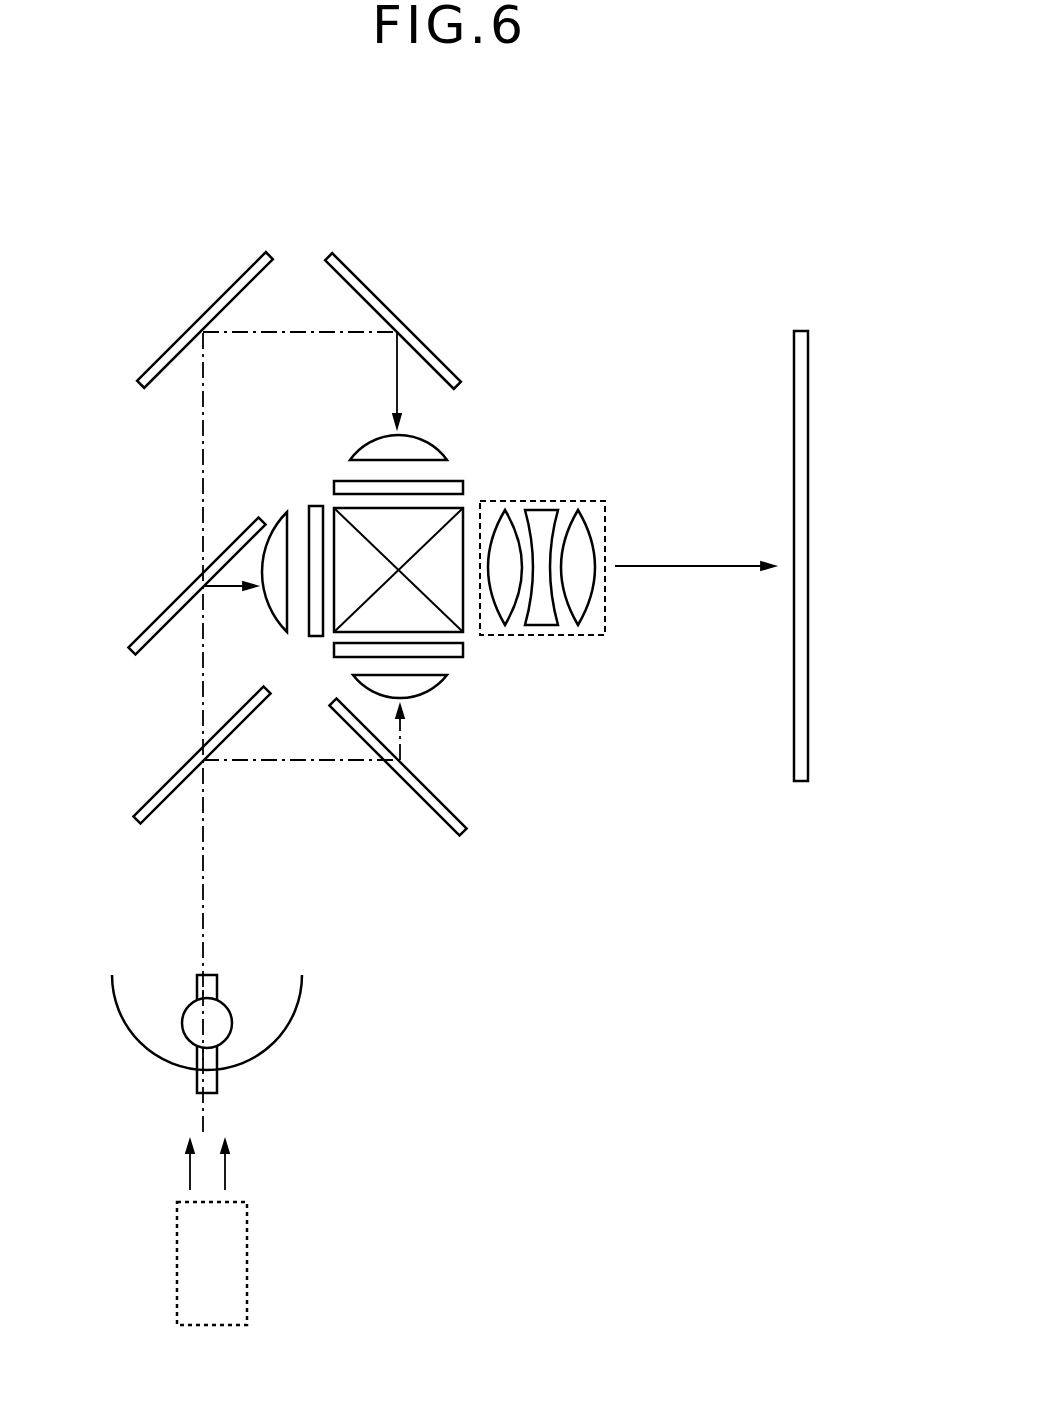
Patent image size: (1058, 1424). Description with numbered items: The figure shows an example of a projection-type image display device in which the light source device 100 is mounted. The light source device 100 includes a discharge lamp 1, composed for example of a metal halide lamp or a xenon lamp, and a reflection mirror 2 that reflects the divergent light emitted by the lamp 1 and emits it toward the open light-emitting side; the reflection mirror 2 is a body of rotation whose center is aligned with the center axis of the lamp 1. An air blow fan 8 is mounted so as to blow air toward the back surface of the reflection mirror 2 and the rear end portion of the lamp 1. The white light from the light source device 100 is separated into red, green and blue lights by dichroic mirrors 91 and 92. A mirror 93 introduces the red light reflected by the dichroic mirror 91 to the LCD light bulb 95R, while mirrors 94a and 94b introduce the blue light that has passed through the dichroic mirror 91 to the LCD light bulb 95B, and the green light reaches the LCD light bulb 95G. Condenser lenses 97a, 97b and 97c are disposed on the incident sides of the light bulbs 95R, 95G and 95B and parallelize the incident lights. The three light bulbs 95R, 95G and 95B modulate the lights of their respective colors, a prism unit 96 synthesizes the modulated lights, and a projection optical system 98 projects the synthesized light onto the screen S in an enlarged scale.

The mirror 94a is at (210, 308).
The mirror 94b is at (377, 292).
The dichroic mirror 92 is at (150, 618).
The dichroic mirror 91 is at (145, 807).
The mirror 93 is at (377, 797).
The condenser lens 97a is at (445, 680).
The condenser lens 97b is at (265, 603).
The condenser lens 97c is at (433, 442).
The LCD light bulb 95G is at (318, 503).
The LCD light bulb 95B is at (462, 485).
The LCD light bulb 95R is at (463, 650).
The prism unit 96 is at (352, 596).
The projection optical system 98 is at (605, 512).
The screen S is at (808, 457).
The light source device 100 is at (306, 1042).
The discharge lamp 1 is at (232, 1030).
The reflection mirror 2 is at (250, 1062).
The air blow fan 8 is at (247, 1262).